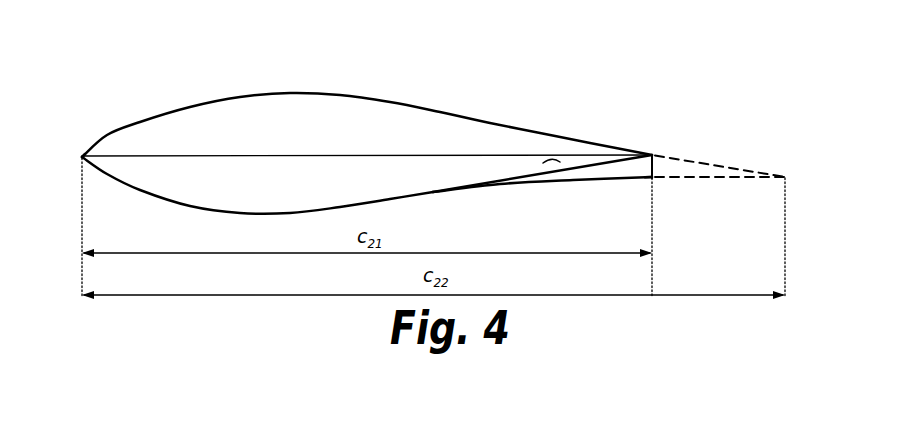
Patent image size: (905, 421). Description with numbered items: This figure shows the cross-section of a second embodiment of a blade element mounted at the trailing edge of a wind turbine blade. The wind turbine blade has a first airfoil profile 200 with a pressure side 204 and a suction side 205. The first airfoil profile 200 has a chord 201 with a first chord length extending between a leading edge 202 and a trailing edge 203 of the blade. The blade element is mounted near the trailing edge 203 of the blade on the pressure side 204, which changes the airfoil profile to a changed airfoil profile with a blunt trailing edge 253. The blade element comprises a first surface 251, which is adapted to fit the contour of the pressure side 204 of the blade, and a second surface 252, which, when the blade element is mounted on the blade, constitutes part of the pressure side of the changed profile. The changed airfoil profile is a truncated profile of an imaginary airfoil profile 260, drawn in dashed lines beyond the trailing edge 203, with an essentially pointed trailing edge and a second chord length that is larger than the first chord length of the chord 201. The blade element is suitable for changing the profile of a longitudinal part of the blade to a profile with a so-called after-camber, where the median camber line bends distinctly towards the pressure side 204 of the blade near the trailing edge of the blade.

The first airfoil profile 200 is at (433, 91).
The chord 201 is at (473, 154).
The leading edge 202 is at (80, 155).
The trailing edge 203 is at (653, 155).
The pressure side 204 is at (173, 209).
The suction side 205 is at (249, 93).
The first surface 251 is at (558, 165).
The second surface 252 is at (500, 185).
The blunt trailing edge 253 is at (661, 178).
The imaginary airfoil profile 260 is at (741, 179).